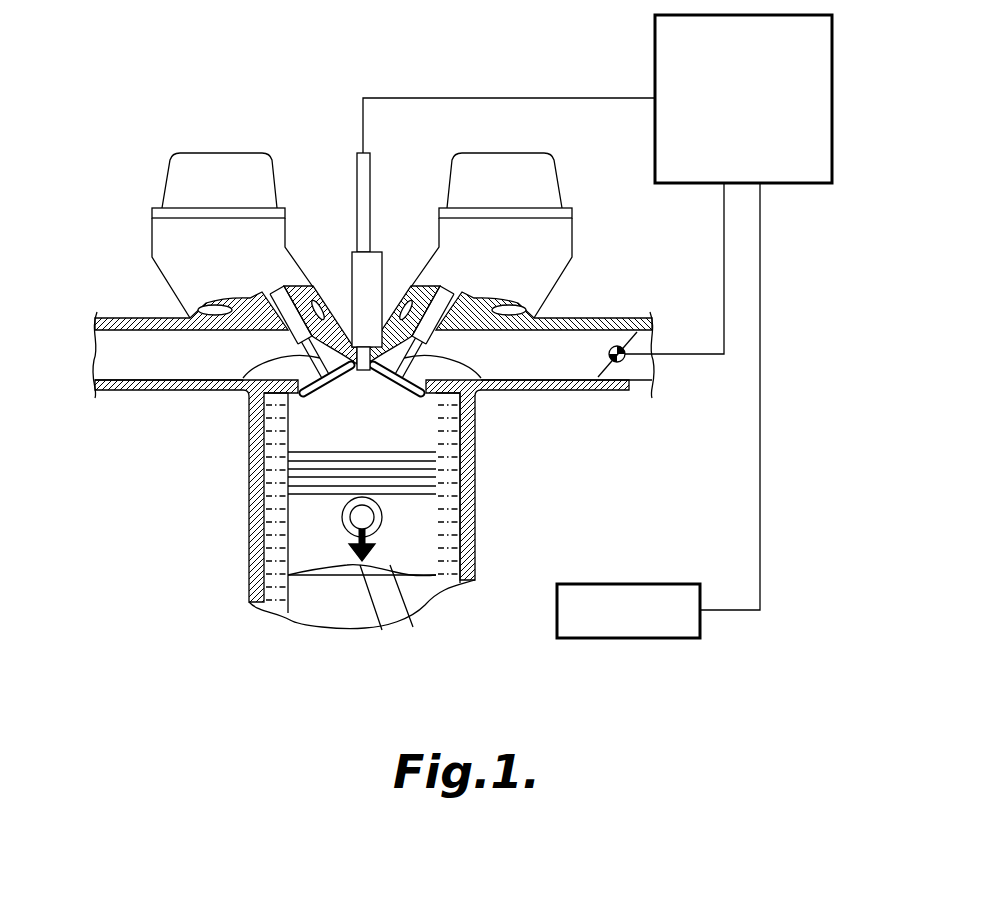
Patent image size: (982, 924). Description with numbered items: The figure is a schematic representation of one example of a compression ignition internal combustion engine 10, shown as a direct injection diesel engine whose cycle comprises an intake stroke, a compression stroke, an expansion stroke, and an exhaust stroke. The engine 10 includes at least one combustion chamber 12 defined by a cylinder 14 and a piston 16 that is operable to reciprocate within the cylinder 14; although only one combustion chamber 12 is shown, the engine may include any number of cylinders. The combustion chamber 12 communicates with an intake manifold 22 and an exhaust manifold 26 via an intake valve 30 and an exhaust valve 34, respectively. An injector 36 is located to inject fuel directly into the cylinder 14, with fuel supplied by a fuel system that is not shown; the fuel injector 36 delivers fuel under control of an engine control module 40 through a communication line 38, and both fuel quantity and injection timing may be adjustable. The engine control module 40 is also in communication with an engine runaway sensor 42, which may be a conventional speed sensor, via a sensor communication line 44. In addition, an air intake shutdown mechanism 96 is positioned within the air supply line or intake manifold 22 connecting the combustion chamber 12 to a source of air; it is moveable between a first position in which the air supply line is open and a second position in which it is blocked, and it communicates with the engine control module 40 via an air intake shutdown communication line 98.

The compression ignition internal combustion engine 10 is at (143, 294).
The combustion chamber 12 is at (343, 436).
The cylinder 14 is at (305, 440).
The piston 16 is at (412, 526).
The intake manifold 22 is at (634, 392).
The exhaust manifold 26 is at (124, 395).
The intake valve 30 is at (448, 376).
The exhaust valve 34 is at (260, 366).
The injector 36 is at (352, 263).
The communication line 38 is at (421, 95).
The engine control module 40 is at (655, 63).
The engine runaway sensor 42 is at (557, 612).
The sensor communication line 44 is at (762, 465).
The air intake shutdown mechanism 96 is at (617, 346).
The air intake shutdown communication line 98 is at (724, 236).